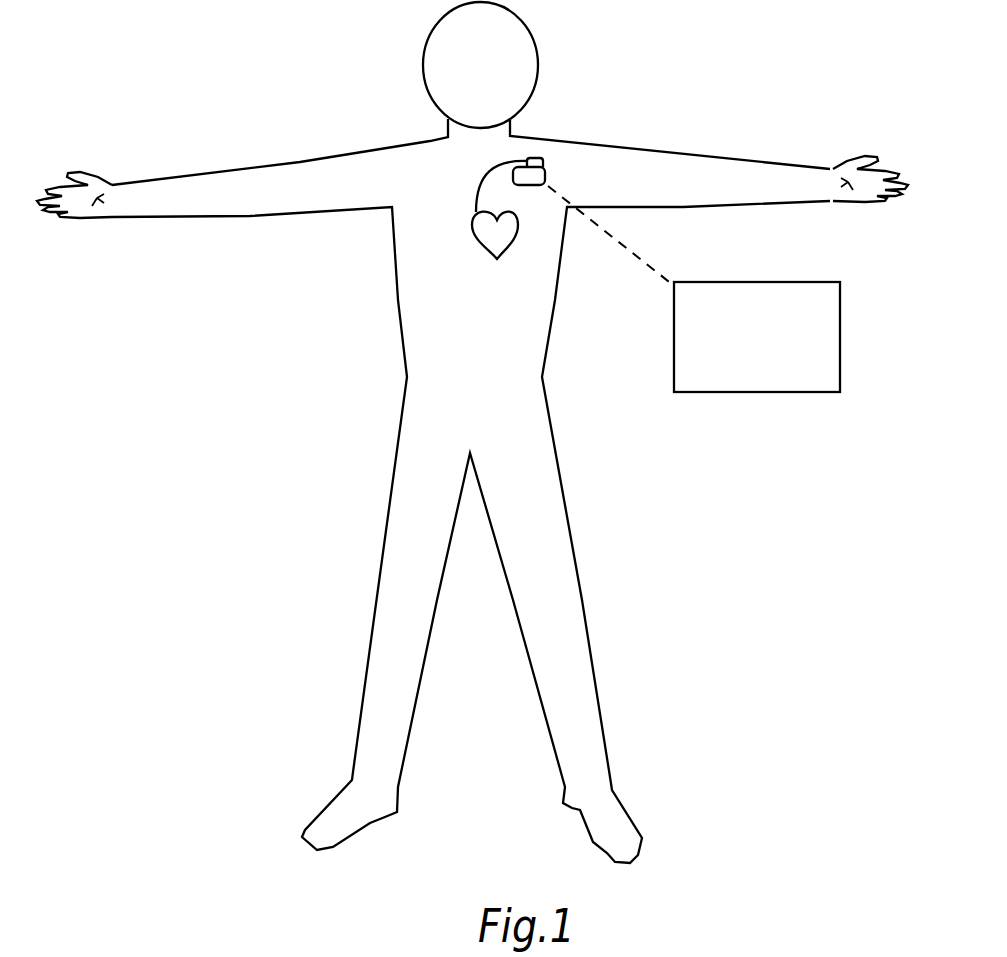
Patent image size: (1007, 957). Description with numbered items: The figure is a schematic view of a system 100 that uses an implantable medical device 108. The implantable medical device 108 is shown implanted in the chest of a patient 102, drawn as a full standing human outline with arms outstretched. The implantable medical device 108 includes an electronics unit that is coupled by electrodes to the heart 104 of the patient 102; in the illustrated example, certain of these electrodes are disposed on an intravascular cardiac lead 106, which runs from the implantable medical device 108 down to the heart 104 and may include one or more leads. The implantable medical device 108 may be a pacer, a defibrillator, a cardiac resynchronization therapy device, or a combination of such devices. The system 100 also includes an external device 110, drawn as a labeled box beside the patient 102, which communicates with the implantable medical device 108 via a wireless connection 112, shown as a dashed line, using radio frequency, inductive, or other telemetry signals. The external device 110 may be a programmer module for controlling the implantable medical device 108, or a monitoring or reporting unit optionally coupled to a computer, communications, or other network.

The system 100 is at (905, 15).
The patient 102 is at (407, 331).
The heart 104 is at (473, 236).
The intravascular cardiac lead 106 is at (477, 182).
The implantable medical device 108 is at (545, 178).
The external device 110 is at (820, 283).
The wireless connection 112 is at (638, 261).